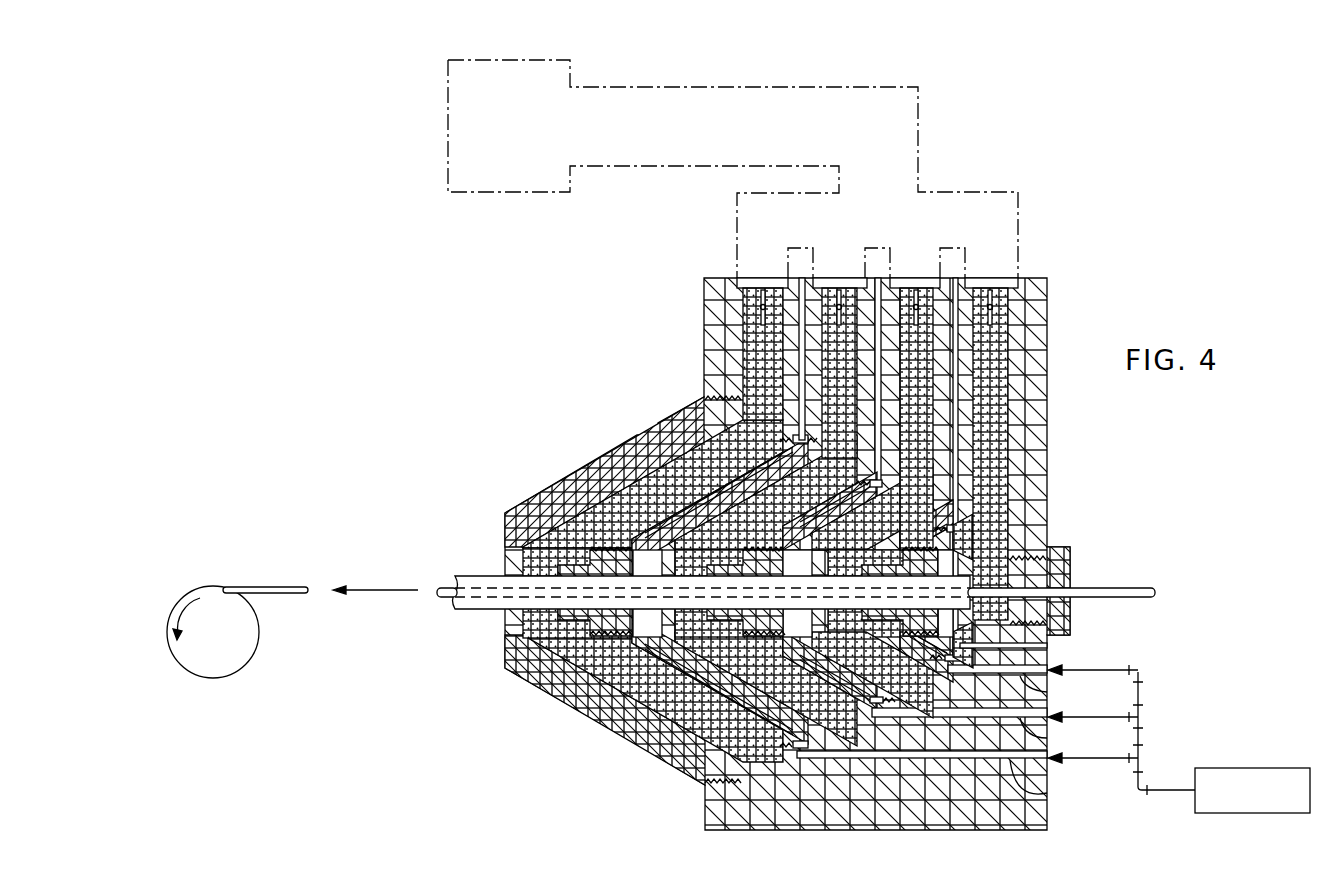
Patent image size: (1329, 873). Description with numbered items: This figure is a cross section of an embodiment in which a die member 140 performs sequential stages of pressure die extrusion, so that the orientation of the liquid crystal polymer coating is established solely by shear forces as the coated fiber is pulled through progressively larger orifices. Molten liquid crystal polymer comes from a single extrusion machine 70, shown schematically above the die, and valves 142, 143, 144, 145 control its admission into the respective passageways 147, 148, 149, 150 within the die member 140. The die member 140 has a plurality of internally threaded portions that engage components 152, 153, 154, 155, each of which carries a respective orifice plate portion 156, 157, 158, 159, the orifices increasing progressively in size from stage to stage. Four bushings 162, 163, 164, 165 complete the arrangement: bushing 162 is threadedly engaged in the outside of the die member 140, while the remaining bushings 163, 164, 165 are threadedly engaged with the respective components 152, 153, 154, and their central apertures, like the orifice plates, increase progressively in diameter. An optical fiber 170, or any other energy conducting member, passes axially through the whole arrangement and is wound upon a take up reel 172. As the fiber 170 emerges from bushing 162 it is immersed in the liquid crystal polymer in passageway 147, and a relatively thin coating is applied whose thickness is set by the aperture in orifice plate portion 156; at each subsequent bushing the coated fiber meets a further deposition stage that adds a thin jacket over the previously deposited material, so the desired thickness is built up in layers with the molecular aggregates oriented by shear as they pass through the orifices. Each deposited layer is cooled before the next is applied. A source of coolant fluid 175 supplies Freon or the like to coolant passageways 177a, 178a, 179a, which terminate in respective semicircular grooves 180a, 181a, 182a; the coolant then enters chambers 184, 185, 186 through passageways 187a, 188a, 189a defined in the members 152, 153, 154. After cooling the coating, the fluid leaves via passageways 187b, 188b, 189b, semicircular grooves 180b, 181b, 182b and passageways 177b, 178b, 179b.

The extrusion machine 70 is at (711, 81).
The die member 140 is at (481, 781).
The valve 142 is at (989, 290).
The valve 143 is at (915, 290).
The valve 144 is at (838, 290).
The valve 145 is at (762, 290).
The passageway 147 is at (1007, 368).
The passageway 148 is at (932, 368).
The passageway 149 is at (857, 368).
The passageway 150 is at (780, 368).
The component 152 is at (906, 548).
The component 153 is at (800, 522).
The component 154 is at (678, 508).
The component 155 is at (605, 468).
The orifice plate portion 156 is at (965, 545).
The orifice plate portion 157 is at (830, 556).
The orifice plate portion 158 is at (676, 556).
The orifice plate portion 159 is at (528, 553).
The bushing 162 is at (1062, 547).
The bushing 163 is at (880, 605).
The bushing 164 is at (776, 524).
The bushing 165 is at (613, 560).
The optical fiber 170 is at (1112, 588).
The take up reel 172 is at (227, 665).
The source of coolant fluid 175 is at (1203, 768).
The coolant passageway 177a is at (1047, 692).
The coolant passageway 177b is at (953, 448).
The coolant passageway 178a is at (1047, 738).
The coolant passageway 178b is at (873, 432).
The coolant passageway 179a is at (1047, 790).
The coolant passageway 179b is at (803, 394).
The semicircular groove 180a is at (962, 662).
The semicircular groove 180b is at (955, 524).
The semicircular groove 181a is at (880, 704).
The semicircular groove 181b is at (878, 488).
The semicircular groove 182a is at (810, 744).
The semicircular groove 182b is at (796, 436).
The chamber 184 is at (880, 620).
The chamber 185 is at (752, 618).
The chamber 186 is at (598, 618).
The passageway 187a is at (1047, 650).
The passageway 187b is at (950, 531).
The passageway 188a is at (815, 680).
The passageway 188b is at (858, 484).
The passageway 189a is at (745, 720).
The passageway 189b is at (784, 442).